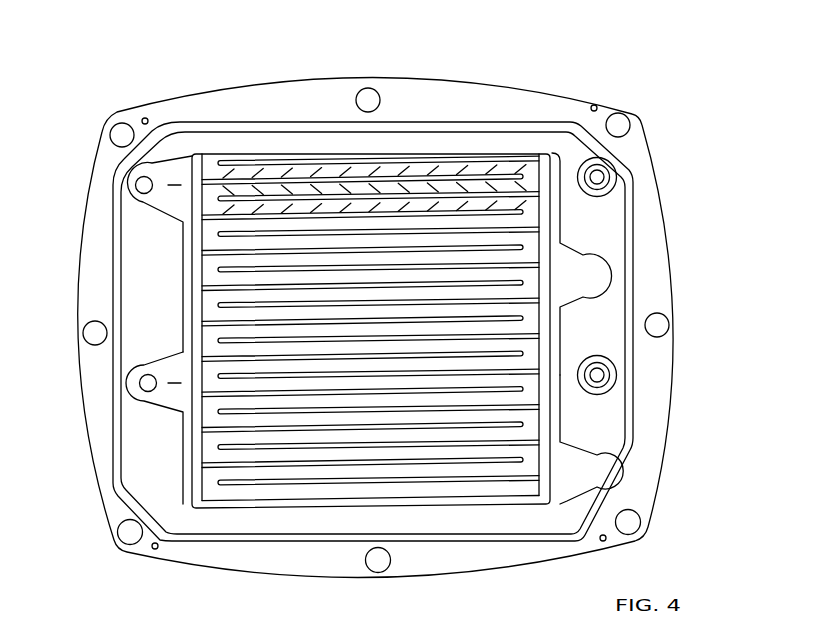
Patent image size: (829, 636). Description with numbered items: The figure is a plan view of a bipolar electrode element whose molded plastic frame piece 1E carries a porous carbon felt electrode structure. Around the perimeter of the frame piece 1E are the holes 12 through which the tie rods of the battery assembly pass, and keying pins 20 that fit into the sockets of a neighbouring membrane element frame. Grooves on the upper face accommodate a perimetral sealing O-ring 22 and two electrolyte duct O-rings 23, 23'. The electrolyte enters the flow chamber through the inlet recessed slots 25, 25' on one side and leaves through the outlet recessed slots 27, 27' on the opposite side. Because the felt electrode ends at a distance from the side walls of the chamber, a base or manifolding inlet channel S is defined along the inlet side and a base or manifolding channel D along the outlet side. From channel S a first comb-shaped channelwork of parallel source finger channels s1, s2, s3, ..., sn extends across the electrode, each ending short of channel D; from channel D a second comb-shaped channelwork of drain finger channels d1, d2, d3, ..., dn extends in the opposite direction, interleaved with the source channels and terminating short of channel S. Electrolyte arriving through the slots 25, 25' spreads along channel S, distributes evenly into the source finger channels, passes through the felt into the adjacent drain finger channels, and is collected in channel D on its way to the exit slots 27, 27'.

The frame piece of the electrode element 1E is at (639, 153).
The perimetral sealing O-ring 22 is at (630, 278).
The holes 12 is at (657, 325).
The keying pins 20 is at (593, 112).
The inlet recessed slot 25 is at (118, 254).
The inlet recessed slot 25' is at (109, 428).
The outlet recessed slot 27 is at (628, 264).
The outlet recessed slot 27' is at (641, 439).
The electrolyte duct O-ring 23 is at (644, 177).
The electrolyte duct O-ring 23' is at (650, 370).
The base or manifolding inlet channel S is at (196, 168).
The base or manifolding channel D is at (553, 165).
The finger channel s1 is at (231, 181).
The finger channel s2 is at (273, 216).
The finger channel s3 is at (319, 251).
The finger channel sn is at (291, 500).
The finger channel d1 is at (413, 162).
The finger channel d2 is at (457, 195).
The finger channel d3 is at (502, 230).
The finger channel dn is at (478, 480).